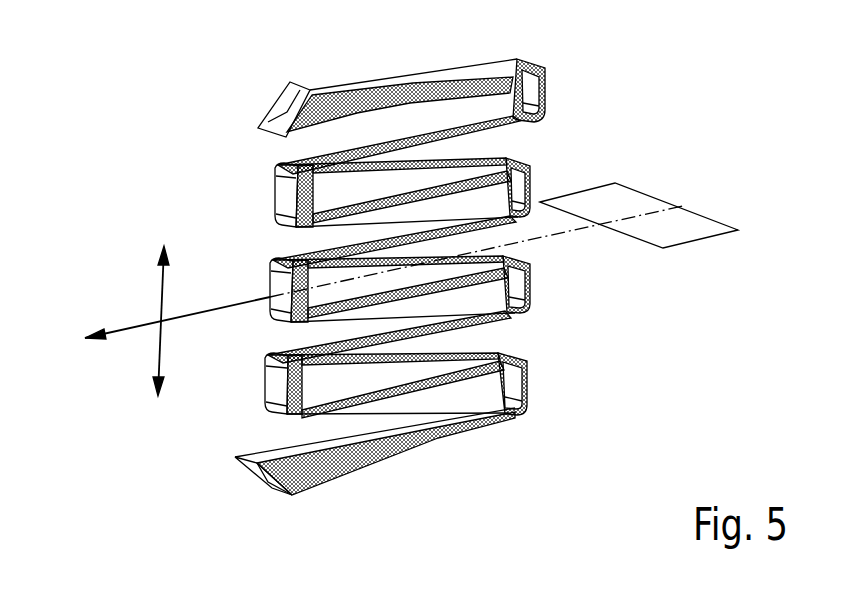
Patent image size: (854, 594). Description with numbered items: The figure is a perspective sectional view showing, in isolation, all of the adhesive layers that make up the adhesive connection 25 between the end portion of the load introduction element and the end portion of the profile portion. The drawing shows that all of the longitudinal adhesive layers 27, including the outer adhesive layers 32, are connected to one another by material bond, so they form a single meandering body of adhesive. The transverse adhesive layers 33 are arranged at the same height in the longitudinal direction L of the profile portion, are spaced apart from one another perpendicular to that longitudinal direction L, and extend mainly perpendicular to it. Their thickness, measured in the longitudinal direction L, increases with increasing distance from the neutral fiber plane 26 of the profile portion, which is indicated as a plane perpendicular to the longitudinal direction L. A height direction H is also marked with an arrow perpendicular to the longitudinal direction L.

The adhesive connection 25 is at (436, 279).
The neutral fiber plane 26 is at (608, 196).
The longitudinal adhesive layers 27 is at (327, 107).
The outer adhesive layers 32 is at (447, 183).
The transverse adhesive layers 33 is at (523, 283).
The longitudinal direction L is at (118, 330).
The height direction H is at (158, 362).